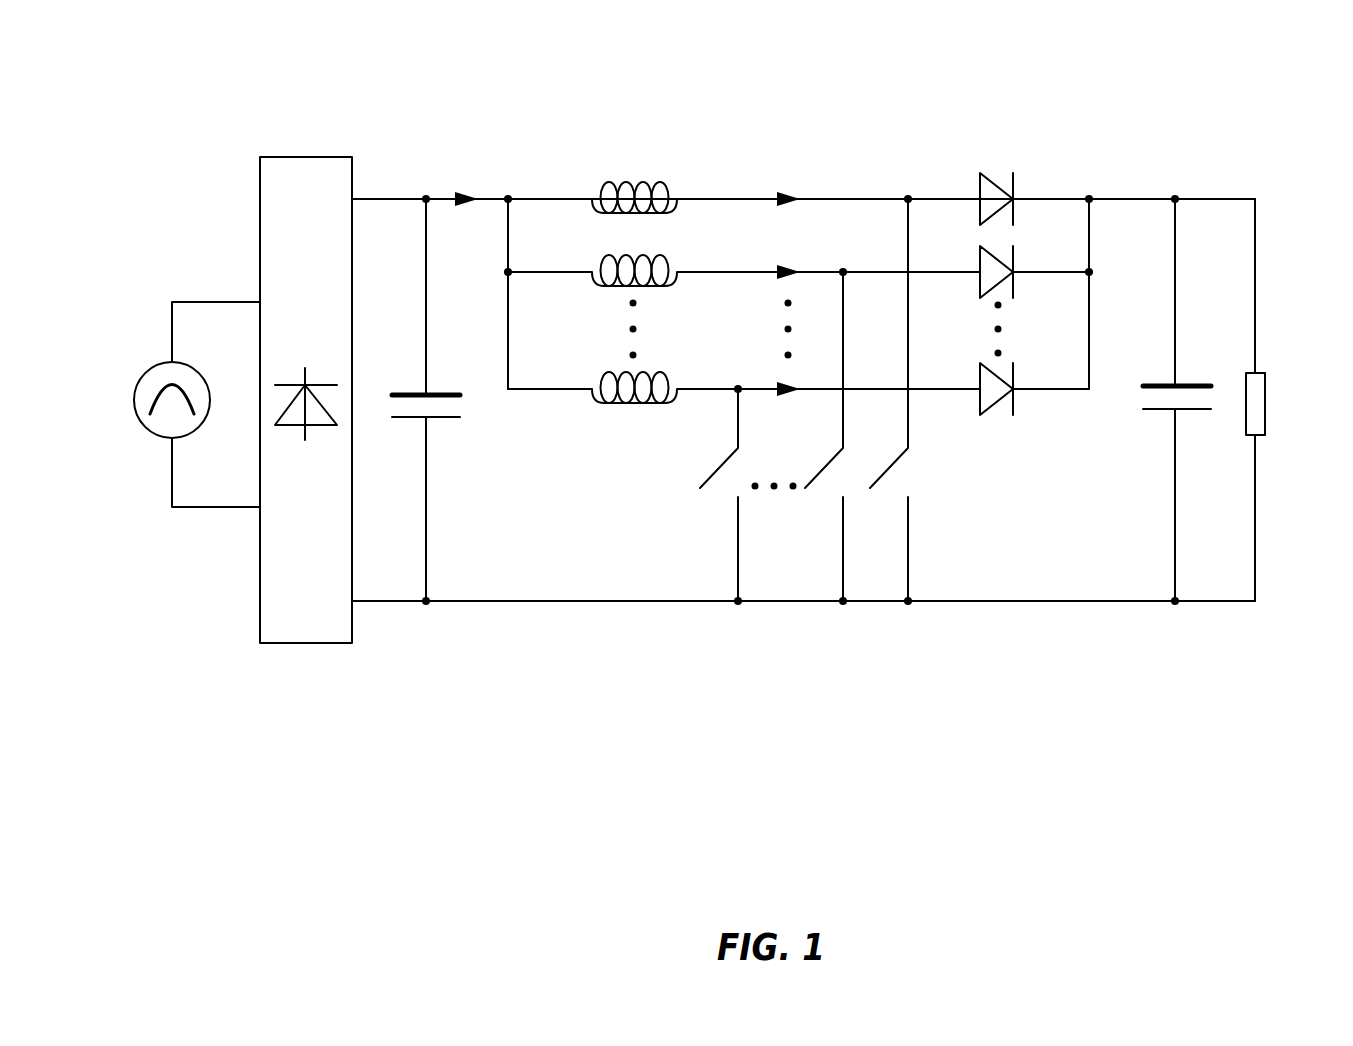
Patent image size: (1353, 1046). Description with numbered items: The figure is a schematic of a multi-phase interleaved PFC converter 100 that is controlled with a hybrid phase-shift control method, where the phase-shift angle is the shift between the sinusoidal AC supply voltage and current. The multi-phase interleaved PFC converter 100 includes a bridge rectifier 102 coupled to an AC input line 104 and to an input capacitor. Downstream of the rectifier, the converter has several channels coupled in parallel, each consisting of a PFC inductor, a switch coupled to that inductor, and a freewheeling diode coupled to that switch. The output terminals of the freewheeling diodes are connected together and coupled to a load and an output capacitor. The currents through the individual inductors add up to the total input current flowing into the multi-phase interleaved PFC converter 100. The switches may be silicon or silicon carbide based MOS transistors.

The multi-phase interleaved PFC converter 100 is at (210, 80).
The bridge rectifier 102 is at (330, 157).
The AC input line 104 is at (152, 364).